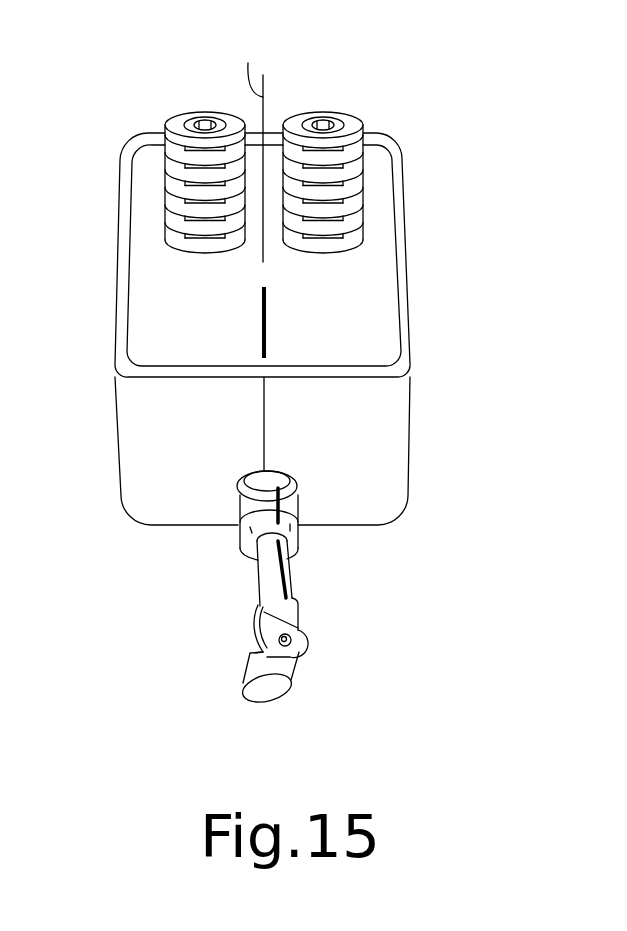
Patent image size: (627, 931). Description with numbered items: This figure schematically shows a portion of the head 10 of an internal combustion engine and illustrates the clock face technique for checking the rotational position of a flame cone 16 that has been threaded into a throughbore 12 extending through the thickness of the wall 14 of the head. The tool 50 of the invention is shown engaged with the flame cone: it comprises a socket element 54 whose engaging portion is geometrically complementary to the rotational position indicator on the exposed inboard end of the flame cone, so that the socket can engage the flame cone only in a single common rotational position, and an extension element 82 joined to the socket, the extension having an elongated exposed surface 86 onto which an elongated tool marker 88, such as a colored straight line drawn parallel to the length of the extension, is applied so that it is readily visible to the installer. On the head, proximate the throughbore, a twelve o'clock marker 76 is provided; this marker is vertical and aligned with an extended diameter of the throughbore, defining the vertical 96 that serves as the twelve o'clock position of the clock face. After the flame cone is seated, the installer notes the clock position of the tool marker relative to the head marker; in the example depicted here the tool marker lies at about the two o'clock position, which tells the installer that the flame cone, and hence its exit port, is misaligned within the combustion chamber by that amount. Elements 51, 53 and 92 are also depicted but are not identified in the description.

The head 10 is at (406, 240).
The throughbore 12 is at (270, 478).
The wall 14 is at (395, 480).
The flame cone 16 is at (253, 473).
The tool 50 is at (302, 604).
The first coil spring 51 is at (206, 118).
The second coil spring 53 is at (324, 118).
The socket element 54 is at (298, 542).
The 12 O'clock marker 76 is at (267, 335).
The extension element 82 is at (263, 598).
The elongated exposed surface 86 is at (257, 615).
The marker 88 is at (277, 492).
The bushing 92 is at (248, 545).
The vertical 96 is at (264, 260).